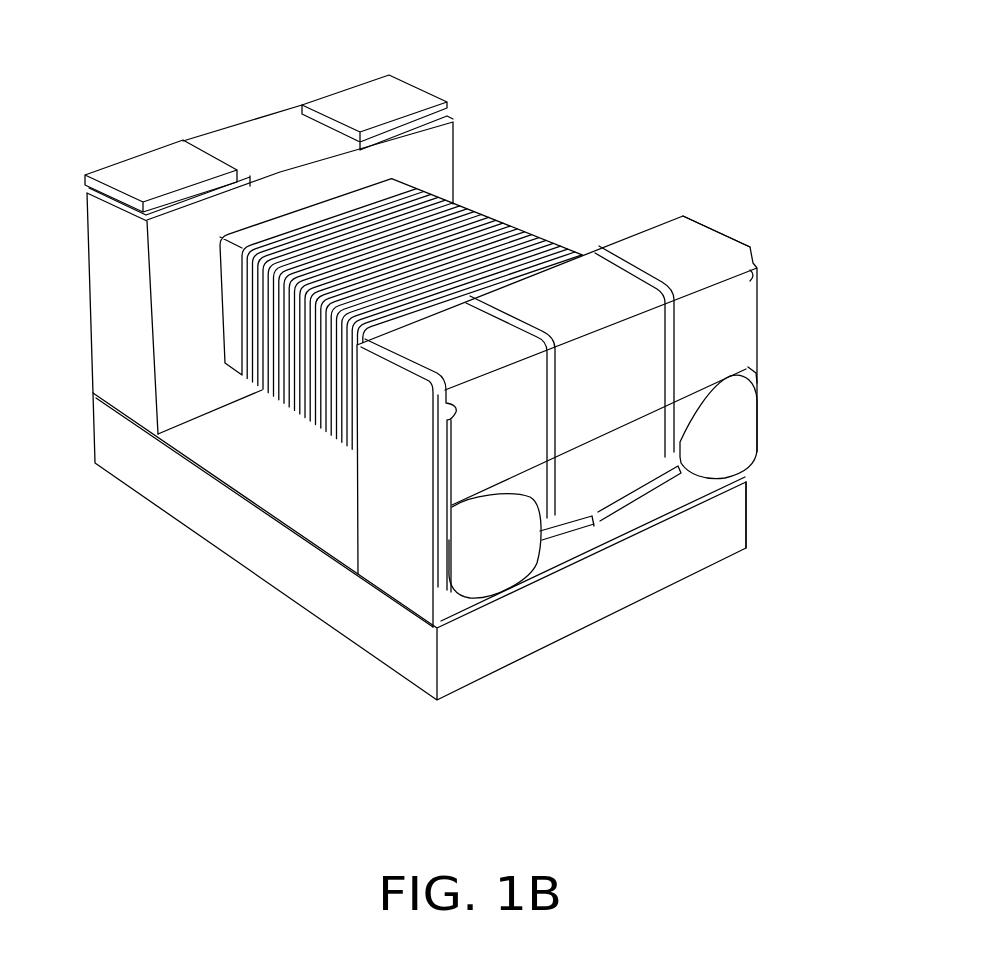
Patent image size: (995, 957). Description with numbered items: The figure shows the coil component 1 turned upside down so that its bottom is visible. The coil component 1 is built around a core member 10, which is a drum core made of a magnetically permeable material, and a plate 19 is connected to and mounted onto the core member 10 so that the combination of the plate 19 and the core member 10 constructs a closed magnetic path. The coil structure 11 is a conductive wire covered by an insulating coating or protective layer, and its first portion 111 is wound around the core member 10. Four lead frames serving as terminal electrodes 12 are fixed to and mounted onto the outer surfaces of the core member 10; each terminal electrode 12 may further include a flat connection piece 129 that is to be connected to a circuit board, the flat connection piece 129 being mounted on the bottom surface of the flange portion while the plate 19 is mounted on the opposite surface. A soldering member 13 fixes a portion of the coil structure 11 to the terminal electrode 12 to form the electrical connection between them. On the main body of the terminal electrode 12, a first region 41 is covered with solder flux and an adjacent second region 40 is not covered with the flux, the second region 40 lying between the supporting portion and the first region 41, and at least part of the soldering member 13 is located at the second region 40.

The coil component 1 is at (610, 56).
The core member 10 is at (391, 178).
The coil structure 11 is at (642, 582).
The first portion 111 is at (310, 430).
The terminal electrode 12 is at (729, 322).
The flat connection piece 129 is at (676, 247).
The soldering member 13 is at (729, 423).
The plate 19 is at (729, 512).
The second region 40 is at (451, 504).
The first region 41 is at (707, 305).